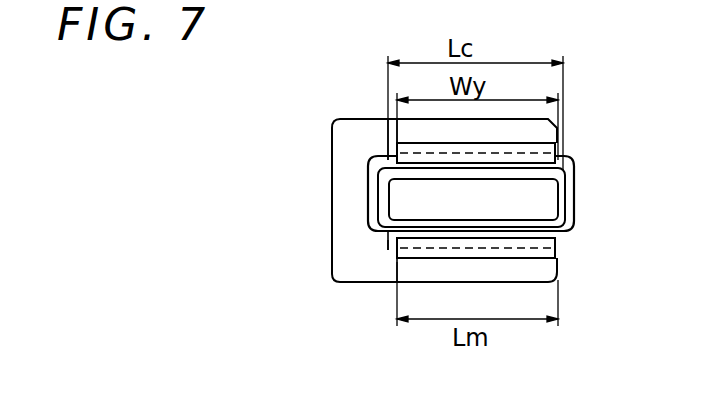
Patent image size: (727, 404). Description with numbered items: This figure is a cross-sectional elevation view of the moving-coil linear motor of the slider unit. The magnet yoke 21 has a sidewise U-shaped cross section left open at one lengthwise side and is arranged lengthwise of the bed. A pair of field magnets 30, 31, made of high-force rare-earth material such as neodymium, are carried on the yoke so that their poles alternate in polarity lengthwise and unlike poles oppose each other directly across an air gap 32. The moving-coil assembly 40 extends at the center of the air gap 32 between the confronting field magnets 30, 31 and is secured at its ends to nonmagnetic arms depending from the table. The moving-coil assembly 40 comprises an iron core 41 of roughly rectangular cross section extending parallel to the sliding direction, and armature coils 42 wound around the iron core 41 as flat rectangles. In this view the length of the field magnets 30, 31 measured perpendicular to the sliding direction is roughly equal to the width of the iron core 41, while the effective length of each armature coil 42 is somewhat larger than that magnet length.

The magnet yoke 21 is at (358, 133).
The field magnet 30 is at (550, 148).
The field magnet 31 is at (552, 242).
The air gap 32 is at (378, 163).
The moving-coil assembly 40 is at (386, 246).
The iron core 41 is at (537, 203).
The armature coil 42 is at (383, 202).